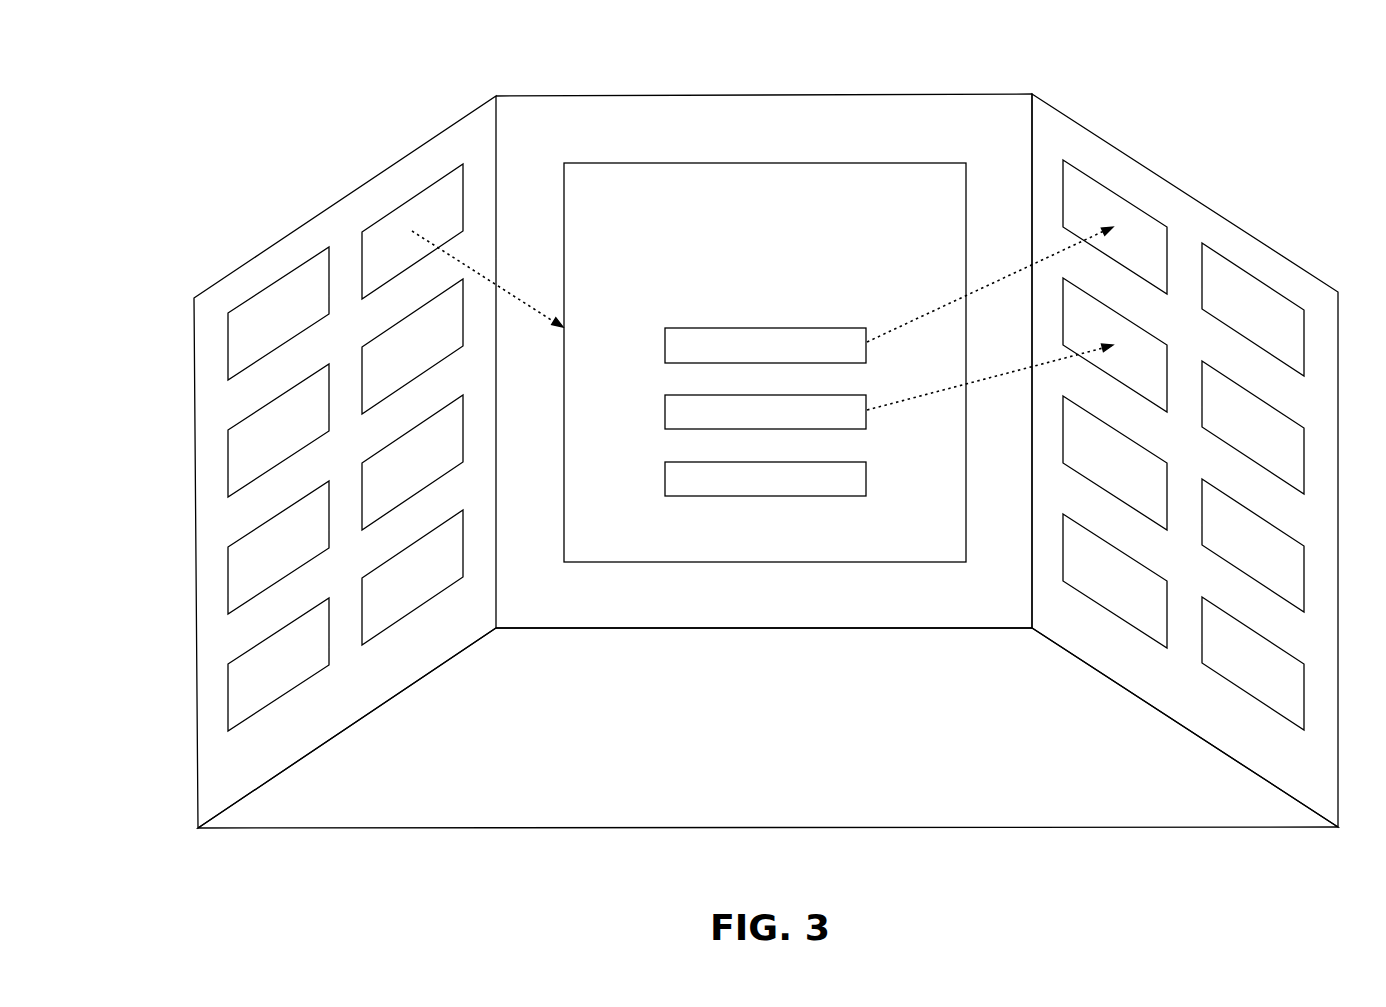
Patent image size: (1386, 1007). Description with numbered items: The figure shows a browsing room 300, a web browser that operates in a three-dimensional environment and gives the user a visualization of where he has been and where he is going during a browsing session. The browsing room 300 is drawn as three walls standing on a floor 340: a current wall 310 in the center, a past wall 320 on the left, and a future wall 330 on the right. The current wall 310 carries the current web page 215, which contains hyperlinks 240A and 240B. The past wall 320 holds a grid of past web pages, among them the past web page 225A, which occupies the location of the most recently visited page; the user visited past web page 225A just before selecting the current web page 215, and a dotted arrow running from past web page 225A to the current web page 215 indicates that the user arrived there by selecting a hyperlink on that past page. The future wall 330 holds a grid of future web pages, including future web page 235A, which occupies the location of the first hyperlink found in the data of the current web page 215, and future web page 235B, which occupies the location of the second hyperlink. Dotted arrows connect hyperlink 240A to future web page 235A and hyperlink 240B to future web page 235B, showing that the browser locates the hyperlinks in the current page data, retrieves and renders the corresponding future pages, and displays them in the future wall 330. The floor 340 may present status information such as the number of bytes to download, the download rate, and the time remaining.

The browsing room 300 is at (760, 485).
The current wall 310 is at (764, 328).
The past wall 320 is at (339, 462).
The future wall 330 is at (1185, 445).
The floor 340 is at (428, 788).
The current web page 215 is at (945, 558).
The past web page 225A is at (380, 213).
The future web page 235A is at (1115, 178).
The future web page 235B is at (1159, 253).
The hyperlink 240A is at (749, 306).
The hyperlink 240B is at (725, 444).